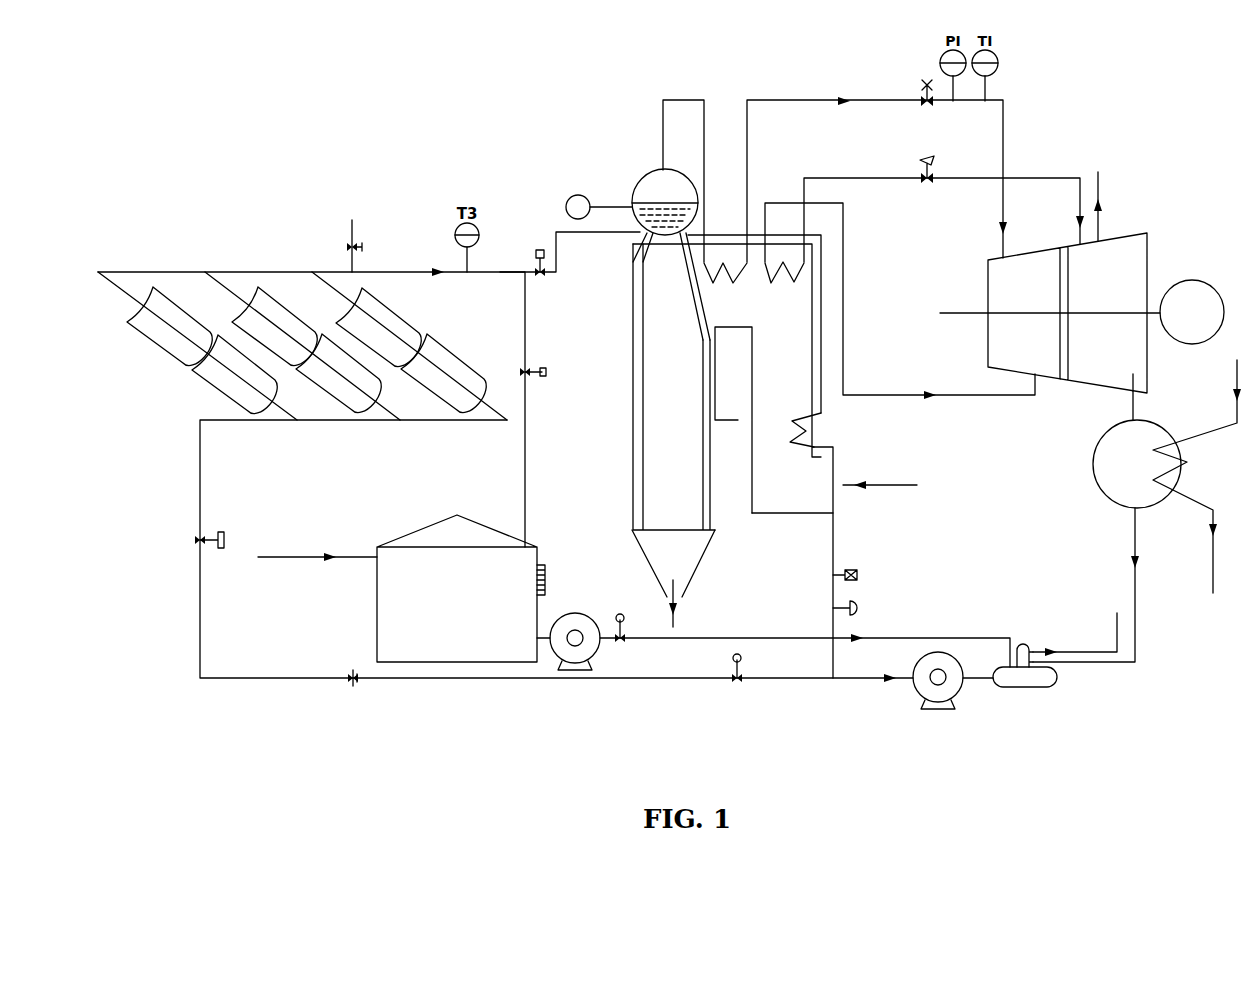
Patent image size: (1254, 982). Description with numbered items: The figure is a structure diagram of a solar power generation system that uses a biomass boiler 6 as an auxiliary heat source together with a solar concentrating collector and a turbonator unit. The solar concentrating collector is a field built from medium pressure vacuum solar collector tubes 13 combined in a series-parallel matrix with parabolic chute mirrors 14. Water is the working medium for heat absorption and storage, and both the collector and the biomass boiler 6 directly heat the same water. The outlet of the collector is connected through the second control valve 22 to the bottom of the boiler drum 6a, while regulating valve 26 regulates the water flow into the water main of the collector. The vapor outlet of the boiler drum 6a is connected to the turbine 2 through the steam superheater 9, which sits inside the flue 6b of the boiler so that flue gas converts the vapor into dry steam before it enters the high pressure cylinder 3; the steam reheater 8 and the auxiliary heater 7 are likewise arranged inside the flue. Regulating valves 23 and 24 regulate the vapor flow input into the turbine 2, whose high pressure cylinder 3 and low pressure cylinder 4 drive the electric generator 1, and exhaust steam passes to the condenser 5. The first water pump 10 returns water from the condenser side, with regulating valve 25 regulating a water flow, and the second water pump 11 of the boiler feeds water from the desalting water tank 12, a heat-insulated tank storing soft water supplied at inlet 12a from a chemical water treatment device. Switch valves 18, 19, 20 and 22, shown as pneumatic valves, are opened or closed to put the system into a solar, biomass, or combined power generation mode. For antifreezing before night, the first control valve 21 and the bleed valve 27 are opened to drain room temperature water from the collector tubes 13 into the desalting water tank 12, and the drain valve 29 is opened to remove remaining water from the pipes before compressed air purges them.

The electric generator 1 is at (1220, 328).
The turbine 2 is at (1053, 250).
The high pressure cylinder 3 is at (987, 337).
The low pressure cylinder 4 is at (1128, 389).
The condenser 5 is at (1137, 464).
The biomass boiler 6 is at (673, 415).
The boiler drum 6a is at (657, 190).
The flue 6b is at (775, 377).
The auxiliary heater 7 is at (798, 436).
The steam reheater 8 is at (777, 278).
The steam superheater 9 is at (716, 280).
The first water pump 10 is at (925, 683).
The second water pump 11 is at (566, 648).
The desalting water tank 12 is at (461, 588).
The water inlet 12a is at (317, 542).
The solar collector tube 13 is at (330, 282).
The parabolic chute mirror 14 is at (425, 328).
The switch valve 18 is at (859, 574).
The switch valve 19 is at (732, 659).
The switch valve 20 is at (616, 616).
The first control valve 21 is at (548, 372).
The second control valve 22 is at (536, 252).
The regulating valve 23 is at (921, 82).
The regulating valve 24 is at (921, 158).
The regulating valve 25 is at (858, 606).
The regulating valve 26 is at (226, 536).
The bleed valve 27 is at (347, 247).
The drain valve 29 is at (335, 691).